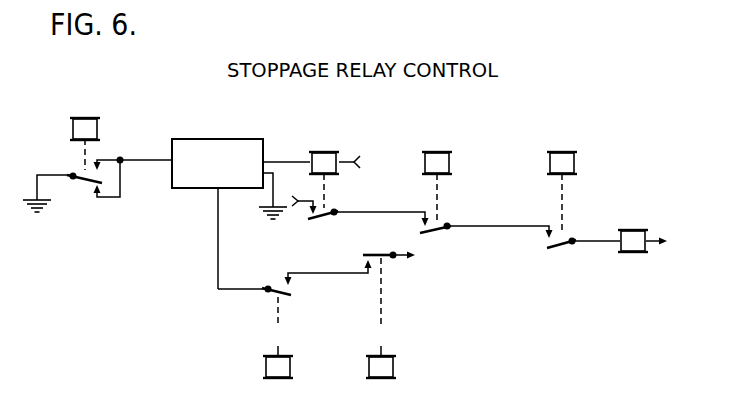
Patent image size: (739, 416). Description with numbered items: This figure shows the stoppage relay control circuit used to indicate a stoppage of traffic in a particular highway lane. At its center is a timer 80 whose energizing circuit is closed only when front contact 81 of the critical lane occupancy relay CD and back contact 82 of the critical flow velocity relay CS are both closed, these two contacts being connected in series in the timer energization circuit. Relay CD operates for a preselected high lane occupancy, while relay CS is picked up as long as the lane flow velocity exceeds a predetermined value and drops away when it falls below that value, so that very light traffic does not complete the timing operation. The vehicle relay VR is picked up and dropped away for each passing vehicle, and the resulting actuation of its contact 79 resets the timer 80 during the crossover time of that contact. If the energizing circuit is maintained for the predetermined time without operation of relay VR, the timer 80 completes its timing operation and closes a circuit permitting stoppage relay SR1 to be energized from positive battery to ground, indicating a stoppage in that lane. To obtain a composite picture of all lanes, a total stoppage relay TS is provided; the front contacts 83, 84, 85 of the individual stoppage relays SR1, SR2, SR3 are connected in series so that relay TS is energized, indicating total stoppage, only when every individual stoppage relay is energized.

The contact 79 is at (83, 181).
The timer 80 is at (213, 139).
The front contact 81 is at (274, 286).
The back contact 82 is at (377, 256).
The front contact 83 is at (337, 216).
The front contact 84 is at (451, 230).
The front contact 85 is at (574, 245).
The vehicle relay VR is at (85, 117).
The stoppage relay SR1 is at (324, 150).
The stoppage relay SR2 is at (443, 139).
The stoppage relay SR3 is at (567, 139).
The total stoppage relay TS is at (637, 221).
The critical lane occupancy relay CD is at (278, 337).
The critical flow velocity relay CS is at (381, 318).